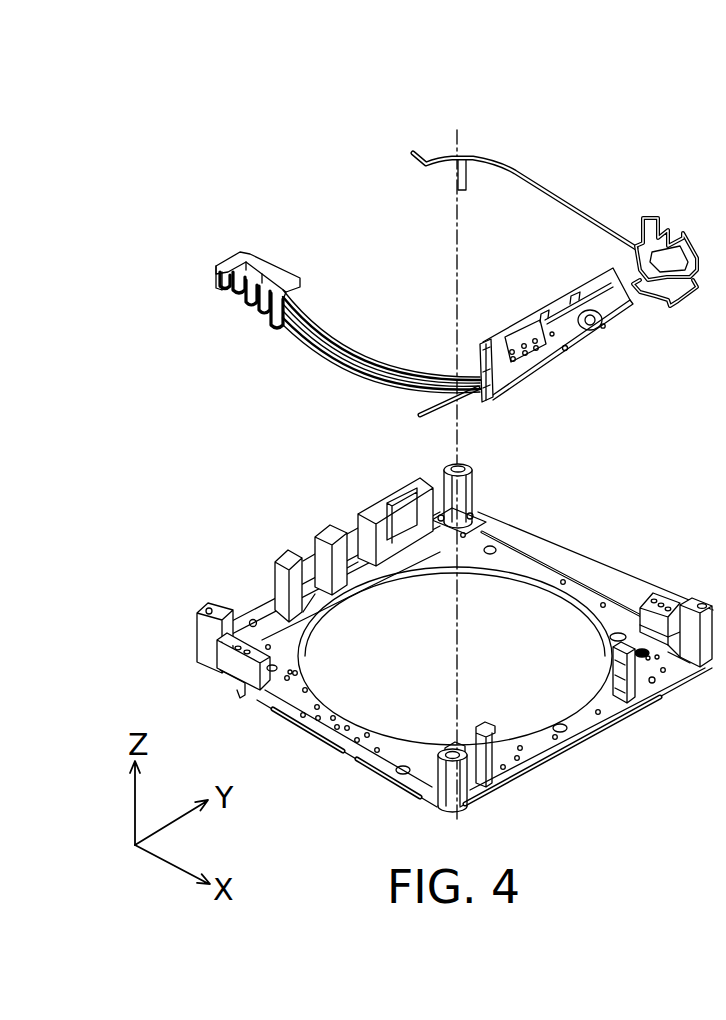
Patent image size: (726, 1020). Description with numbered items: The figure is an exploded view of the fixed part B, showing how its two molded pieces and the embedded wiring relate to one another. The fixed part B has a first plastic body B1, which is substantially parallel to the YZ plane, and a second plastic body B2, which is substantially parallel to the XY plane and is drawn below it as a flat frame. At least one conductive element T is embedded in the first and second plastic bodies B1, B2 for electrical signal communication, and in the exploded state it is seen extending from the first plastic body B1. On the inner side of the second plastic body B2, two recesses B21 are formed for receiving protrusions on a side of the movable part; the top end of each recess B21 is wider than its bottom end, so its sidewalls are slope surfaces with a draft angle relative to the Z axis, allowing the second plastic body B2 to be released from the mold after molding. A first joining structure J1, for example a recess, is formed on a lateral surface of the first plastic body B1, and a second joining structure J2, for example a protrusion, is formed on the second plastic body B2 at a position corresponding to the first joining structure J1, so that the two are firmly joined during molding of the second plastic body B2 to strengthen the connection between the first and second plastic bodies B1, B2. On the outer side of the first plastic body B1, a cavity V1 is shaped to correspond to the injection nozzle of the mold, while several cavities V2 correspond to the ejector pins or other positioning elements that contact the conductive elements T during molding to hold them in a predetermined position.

The fixed part B is at (455, 417).
The first plastic body B1 is at (555, 300).
The second plastic body B2 is at (455, 638).
The recesses B21 is at (363, 517).
The first joining structure J1 is at (492, 373).
The second joining structure J2 is at (628, 692).
The conductive element T is at (336, 358).
The cavity V1 is at (595, 330).
The cavities V2 is at (533, 347).